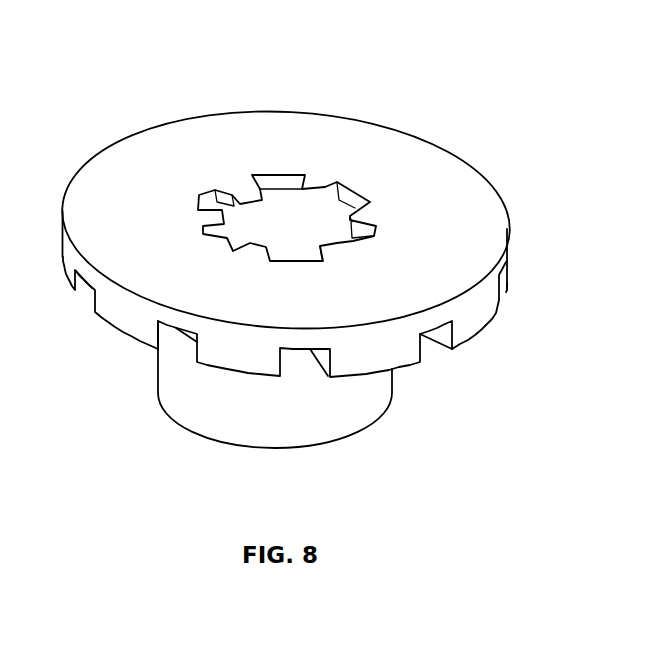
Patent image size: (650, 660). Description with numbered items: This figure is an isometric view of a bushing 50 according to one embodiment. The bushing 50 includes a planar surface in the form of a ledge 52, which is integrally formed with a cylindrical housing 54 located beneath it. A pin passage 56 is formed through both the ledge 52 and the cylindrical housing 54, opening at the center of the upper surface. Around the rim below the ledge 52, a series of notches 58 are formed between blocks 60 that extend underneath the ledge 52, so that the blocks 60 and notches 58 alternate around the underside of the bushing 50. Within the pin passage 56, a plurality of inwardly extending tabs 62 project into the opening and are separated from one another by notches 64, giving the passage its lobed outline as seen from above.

The bushing 50 is at (176, 49).
The ledge 52 is at (138, 170).
The cylindrical housing 54 is at (247, 430).
The pin passage 56 is at (284, 205).
The notches 58 is at (84, 301).
The blocks 60 is at (133, 329).
The inwardly extending tabs 62 is at (313, 188).
The notches 64 is at (352, 188).